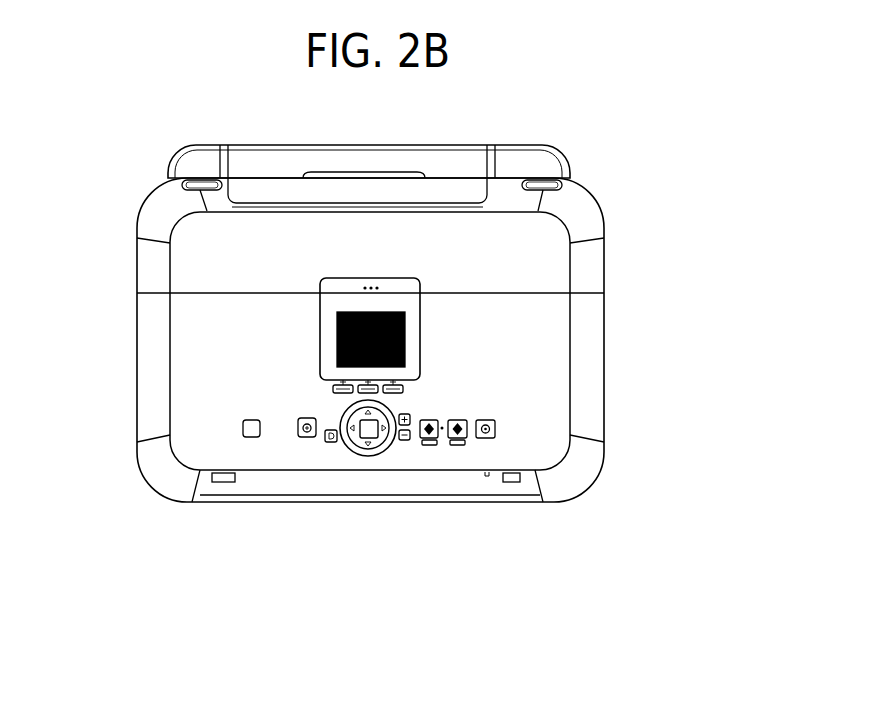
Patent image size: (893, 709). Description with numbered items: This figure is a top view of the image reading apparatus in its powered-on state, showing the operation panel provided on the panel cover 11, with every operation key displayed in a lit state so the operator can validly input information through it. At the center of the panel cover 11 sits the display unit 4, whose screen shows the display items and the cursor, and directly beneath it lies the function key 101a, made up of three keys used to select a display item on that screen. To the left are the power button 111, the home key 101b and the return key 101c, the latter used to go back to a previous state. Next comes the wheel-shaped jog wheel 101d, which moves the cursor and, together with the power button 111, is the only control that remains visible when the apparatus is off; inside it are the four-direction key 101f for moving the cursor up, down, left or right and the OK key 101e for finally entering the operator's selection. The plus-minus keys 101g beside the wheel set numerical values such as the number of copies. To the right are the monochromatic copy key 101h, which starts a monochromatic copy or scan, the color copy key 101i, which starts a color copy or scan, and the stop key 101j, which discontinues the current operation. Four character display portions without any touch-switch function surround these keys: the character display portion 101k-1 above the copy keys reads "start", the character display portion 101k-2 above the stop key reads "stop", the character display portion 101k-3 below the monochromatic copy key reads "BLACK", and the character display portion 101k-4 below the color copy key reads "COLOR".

The display unit 4 is at (417, 330).
The panel cover 11 is at (180, 380).
The power button 111 is at (243, 427).
The function key 101a is at (403, 389).
The home key 101b is at (302, 437).
The return key 101c is at (330, 442).
The jog wheel 101d is at (349, 449).
The OK key 101e is at (360, 448).
The four-direction key 101f is at (364, 439).
The plus-minus keys 101g is at (405, 440).
The monochromatic copy key 101h is at (436, 440).
The color copy key 101i is at (468, 439).
The stop key 101j is at (495, 432).
The character display portion 101k-1 is at (462, 396).
The character display portion 101k-2 is at (503, 411).
The character display portion 101k-3 is at (428, 445).
The character display portion 101k-4 is at (456, 445).